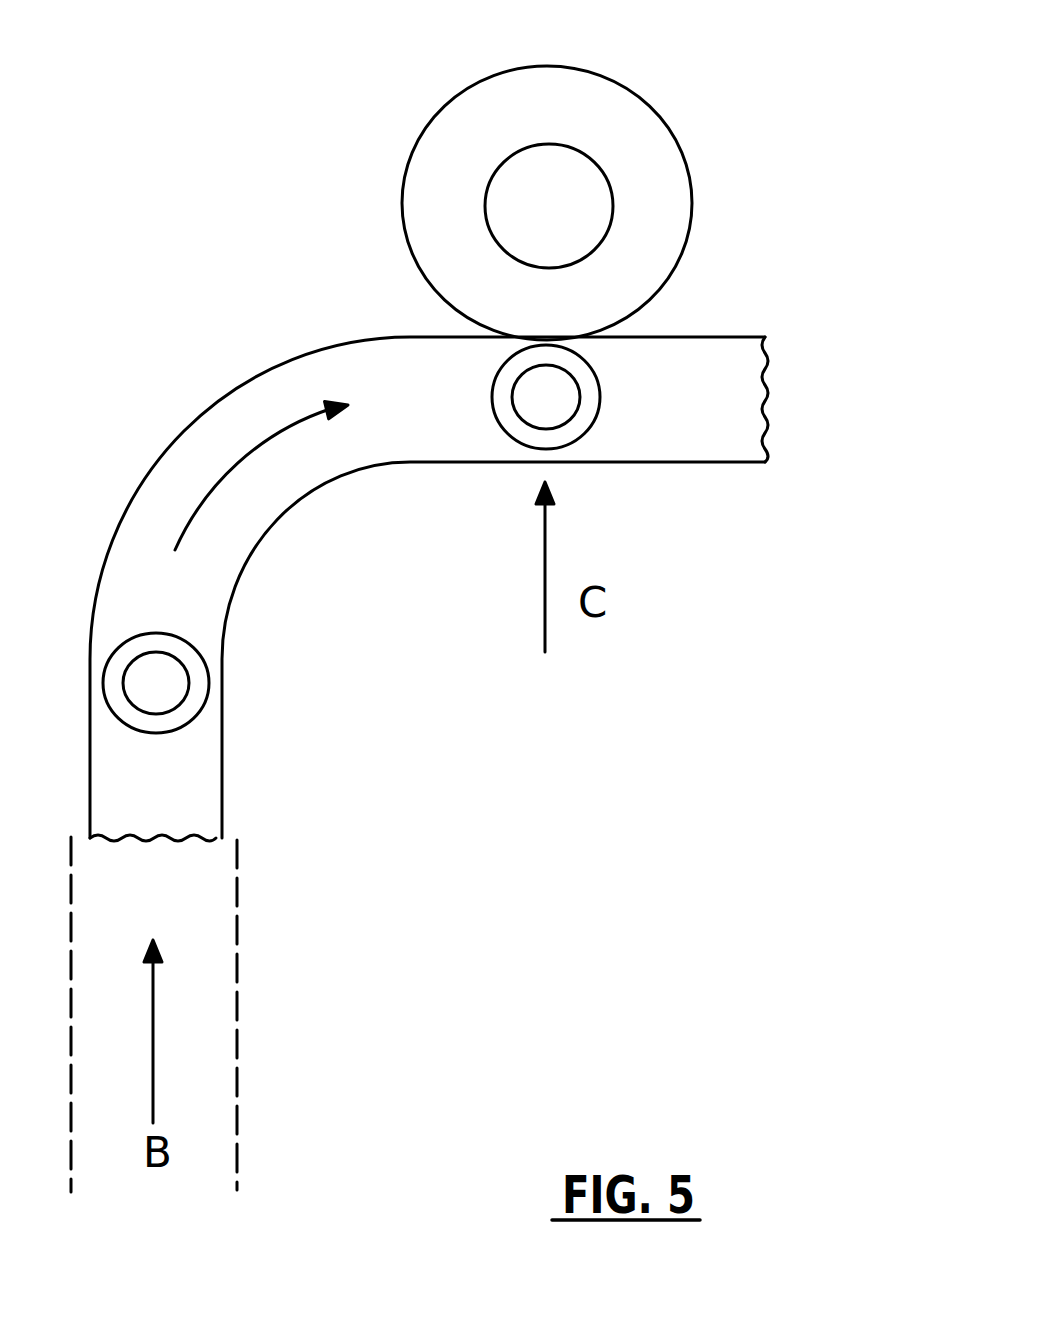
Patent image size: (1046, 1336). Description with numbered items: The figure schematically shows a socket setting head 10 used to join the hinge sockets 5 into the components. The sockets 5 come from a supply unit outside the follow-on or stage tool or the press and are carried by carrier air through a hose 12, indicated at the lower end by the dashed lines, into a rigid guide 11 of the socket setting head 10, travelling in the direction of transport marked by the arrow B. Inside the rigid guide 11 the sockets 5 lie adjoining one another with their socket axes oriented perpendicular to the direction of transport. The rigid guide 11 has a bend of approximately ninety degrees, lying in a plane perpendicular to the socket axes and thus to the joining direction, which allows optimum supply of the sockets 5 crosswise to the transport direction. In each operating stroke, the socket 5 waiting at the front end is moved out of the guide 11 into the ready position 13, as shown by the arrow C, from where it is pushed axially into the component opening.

The socket 5 is at (592, 397).
The socket setting head 10 is at (740, 162).
The rigid guide 11 is at (184, 375).
The hose 12 is at (237, 948).
The ready position 13 is at (608, 137).